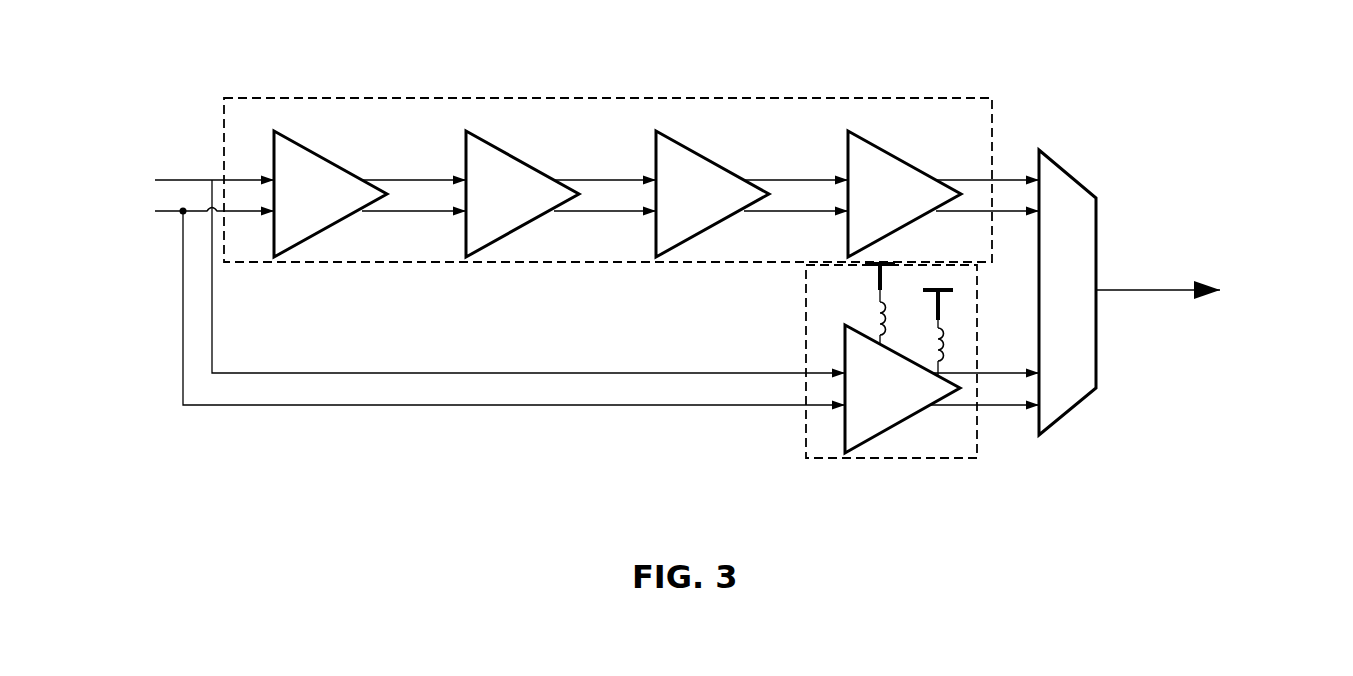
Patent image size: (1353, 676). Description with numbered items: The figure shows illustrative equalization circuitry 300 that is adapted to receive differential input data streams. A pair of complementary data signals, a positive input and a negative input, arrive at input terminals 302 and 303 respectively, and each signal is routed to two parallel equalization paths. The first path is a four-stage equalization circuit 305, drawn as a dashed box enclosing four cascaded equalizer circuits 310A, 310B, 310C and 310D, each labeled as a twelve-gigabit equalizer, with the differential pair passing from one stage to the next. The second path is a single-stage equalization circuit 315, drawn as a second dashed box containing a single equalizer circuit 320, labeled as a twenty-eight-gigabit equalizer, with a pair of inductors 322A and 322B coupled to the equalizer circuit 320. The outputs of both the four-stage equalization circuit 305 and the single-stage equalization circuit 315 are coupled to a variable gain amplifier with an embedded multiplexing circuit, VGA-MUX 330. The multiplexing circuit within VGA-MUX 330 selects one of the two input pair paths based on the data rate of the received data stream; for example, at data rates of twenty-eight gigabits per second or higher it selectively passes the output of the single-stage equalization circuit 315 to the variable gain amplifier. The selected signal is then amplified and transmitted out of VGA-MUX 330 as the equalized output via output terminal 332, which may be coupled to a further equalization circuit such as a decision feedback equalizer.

The equalization circuitry 300 is at (1121, 89).
The input terminal 302 is at (178, 180).
The input terminal 303 is at (182, 231).
The four-stage equalization circuit 305 is at (913, 98).
The equalizer circuit 310A is at (303, 162).
The equalizer circuit 310B is at (496, 162).
The equalizer circuit 310C is at (692, 162).
The equalizer circuit 310D is at (878, 154).
The single-stage equalization circuit 315 is at (806, 438).
The equalizer circuit 320 is at (887, 423).
The inductor 322A is at (880, 312).
The inductor 322B is at (949, 340).
The VGA-MUX 330 is at (1097, 198).
The output terminal 332 is at (1168, 290).